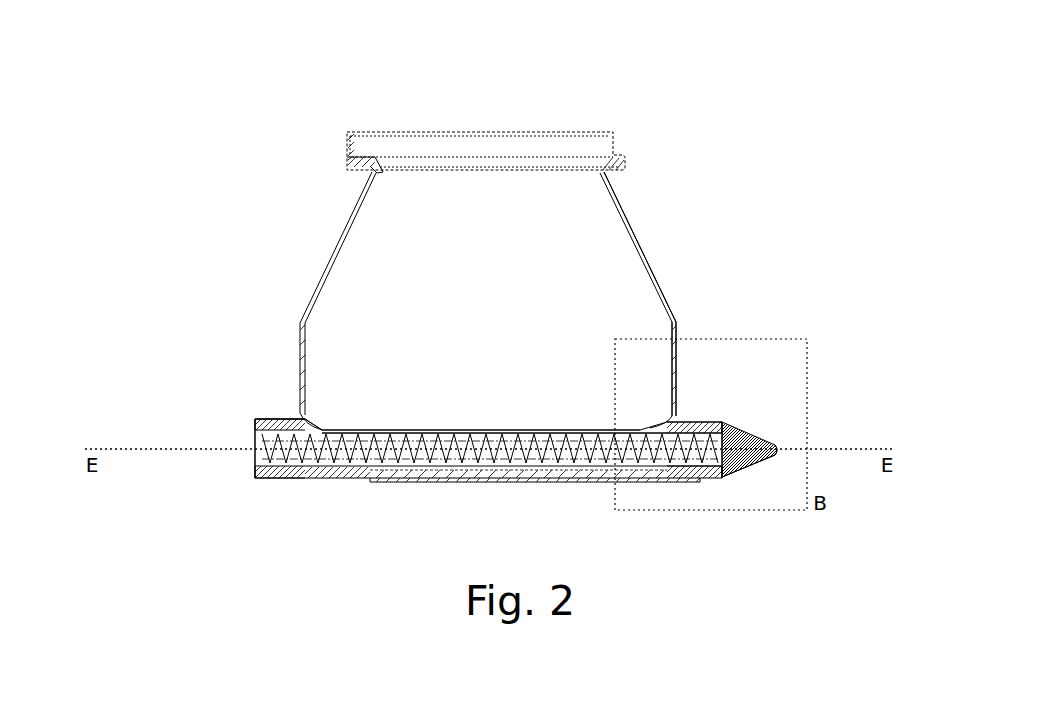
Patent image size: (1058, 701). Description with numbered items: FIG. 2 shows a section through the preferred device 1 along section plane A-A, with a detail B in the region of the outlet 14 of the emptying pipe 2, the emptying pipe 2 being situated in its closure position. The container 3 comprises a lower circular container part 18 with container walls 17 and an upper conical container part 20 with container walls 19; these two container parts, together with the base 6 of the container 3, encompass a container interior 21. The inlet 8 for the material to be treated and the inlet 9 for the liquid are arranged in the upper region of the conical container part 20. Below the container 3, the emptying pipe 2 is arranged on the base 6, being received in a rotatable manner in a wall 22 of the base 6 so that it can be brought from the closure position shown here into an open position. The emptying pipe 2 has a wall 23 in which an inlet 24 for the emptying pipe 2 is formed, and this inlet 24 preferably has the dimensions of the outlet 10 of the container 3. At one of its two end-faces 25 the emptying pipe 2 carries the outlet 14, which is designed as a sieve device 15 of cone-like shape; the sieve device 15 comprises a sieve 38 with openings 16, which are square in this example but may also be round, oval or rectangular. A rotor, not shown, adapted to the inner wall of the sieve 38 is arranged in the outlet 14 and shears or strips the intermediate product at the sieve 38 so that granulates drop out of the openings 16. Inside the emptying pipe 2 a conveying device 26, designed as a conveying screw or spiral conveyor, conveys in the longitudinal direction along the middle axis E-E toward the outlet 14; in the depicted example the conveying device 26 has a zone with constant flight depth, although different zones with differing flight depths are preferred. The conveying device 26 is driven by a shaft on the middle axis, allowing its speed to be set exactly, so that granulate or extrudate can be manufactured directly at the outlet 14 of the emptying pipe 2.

The device 1 is at (178, 47).
The emptying pipe 2 is at (246, 473).
The container 3 is at (652, 228).
The base 6 is at (623, 413).
The inlet 8 is at (482, 158).
The inlet 9 is at (486, 101).
The outlet 10 is at (439, 423).
The outlet 14 is at (732, 484).
The sieve device 15 is at (771, 472).
The openings 16 is at (767, 437).
The container walls 17 is at (680, 370).
The lower circular container part 18 is at (228, 370).
The container walls 19 is at (655, 271).
The upper conical container part 20 is at (258, 227).
The container interior 21 is at (352, 404).
The wall 22 is at (275, 417).
The wall 23 is at (262, 478).
The inlet 24 is at (382, 473).
The end-face 25 is at (226, 444).
The conveying device 26 is at (450, 469).
The sieve 38 is at (750, 468).